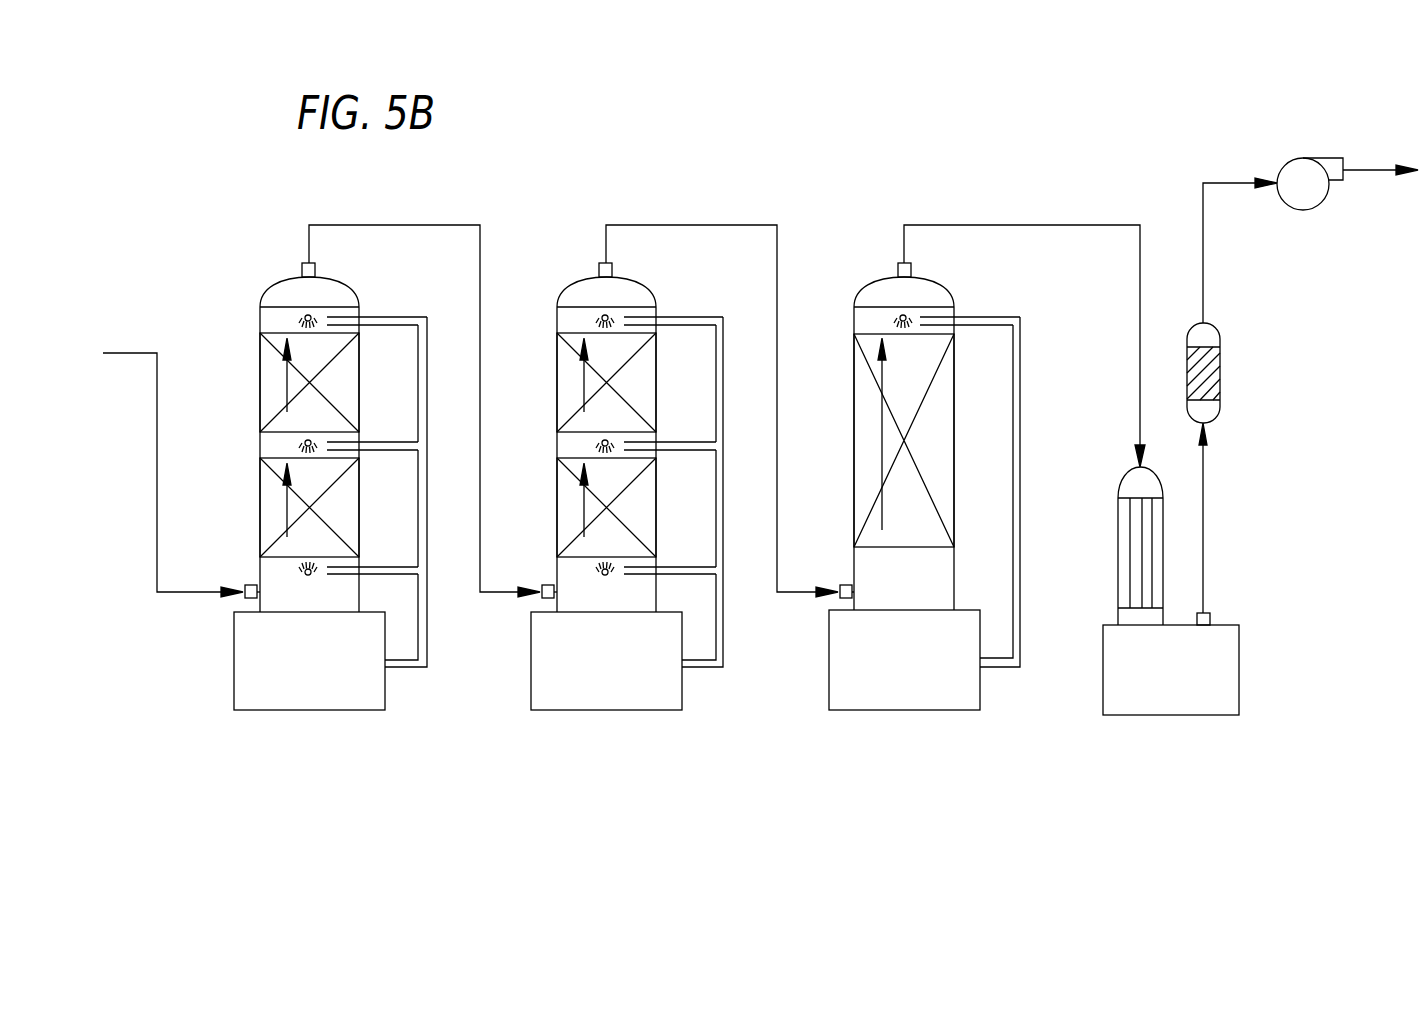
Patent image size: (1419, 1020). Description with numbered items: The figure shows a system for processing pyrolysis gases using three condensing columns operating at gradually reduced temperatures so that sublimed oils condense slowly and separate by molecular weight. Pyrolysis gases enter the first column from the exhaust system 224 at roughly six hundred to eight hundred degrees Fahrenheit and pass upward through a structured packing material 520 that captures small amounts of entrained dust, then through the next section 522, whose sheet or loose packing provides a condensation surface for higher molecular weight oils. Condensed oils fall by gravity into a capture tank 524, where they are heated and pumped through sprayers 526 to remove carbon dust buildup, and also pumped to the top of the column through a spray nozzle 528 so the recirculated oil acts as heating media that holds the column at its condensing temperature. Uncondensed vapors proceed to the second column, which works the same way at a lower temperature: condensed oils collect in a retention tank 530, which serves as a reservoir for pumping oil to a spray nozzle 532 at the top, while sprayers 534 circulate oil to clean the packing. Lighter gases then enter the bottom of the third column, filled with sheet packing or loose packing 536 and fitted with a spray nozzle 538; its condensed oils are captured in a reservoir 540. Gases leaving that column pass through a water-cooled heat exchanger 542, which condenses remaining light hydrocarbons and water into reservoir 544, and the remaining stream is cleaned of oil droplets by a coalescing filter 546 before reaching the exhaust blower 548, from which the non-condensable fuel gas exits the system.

The exhaust system 224 is at (130, 353).
The structured packing material 520 is at (260, 510).
The next section of Column 1 522 is at (260, 384).
The capture tank 524 is at (234, 664).
The sprayers 526 is at (385, 442).
The spray nozzle 528 is at (385, 318).
The retention tank 530 is at (531, 664).
The spray nozzle 532 is at (683, 318).
The sprayers 534 is at (682, 442).
The sheet packing or loose packing 536 is at (854, 510).
The spray nozzle 538 is at (980, 318).
The reservoir 540 is at (829, 663).
The water-cooled heat exchanger 542 is at (1118, 553).
The reservoir 544 is at (1103, 668).
The coalescing filter 546 is at (1222, 357).
The exhaust blower 548 is at (1305, 210).